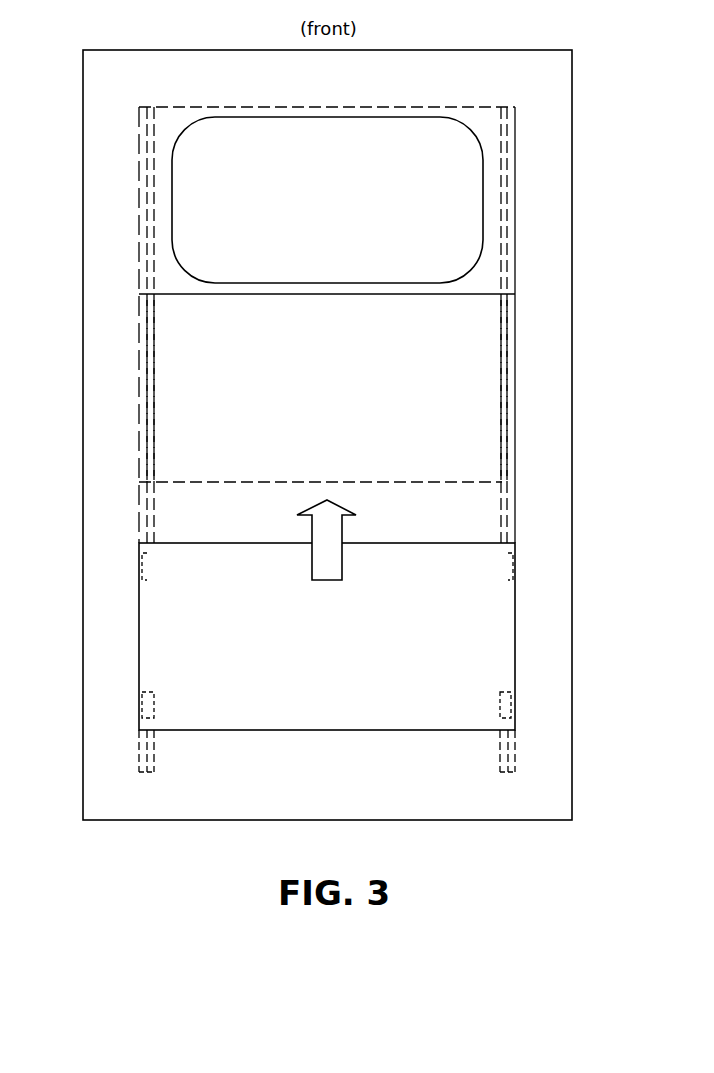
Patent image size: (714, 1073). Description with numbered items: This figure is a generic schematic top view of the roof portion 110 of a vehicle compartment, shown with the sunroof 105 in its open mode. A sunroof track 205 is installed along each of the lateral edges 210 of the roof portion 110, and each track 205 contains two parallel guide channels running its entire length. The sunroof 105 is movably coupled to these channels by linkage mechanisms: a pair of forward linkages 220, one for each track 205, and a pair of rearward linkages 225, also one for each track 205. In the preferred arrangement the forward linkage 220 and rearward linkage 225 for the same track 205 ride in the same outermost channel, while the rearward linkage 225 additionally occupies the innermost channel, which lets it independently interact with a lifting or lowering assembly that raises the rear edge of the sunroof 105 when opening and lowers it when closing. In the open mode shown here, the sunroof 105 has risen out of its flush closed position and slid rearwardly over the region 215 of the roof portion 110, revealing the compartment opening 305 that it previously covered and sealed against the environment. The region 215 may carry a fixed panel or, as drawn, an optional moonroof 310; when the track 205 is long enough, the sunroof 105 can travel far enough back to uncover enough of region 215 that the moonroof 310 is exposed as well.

The roof portion 110 is at (102, 106).
The sunroof 105 is at (327, 615).
The sunroof track 205 is at (153, 425).
The lateral edges 210 is at (92, 492).
The region 215 is at (540, 346).
The forward linkages 220 is at (147, 568).
The rearward linkages 225 is at (153, 713).
The compartment opening 305 is at (327, 200).
The moonroof 310 is at (327, 388).